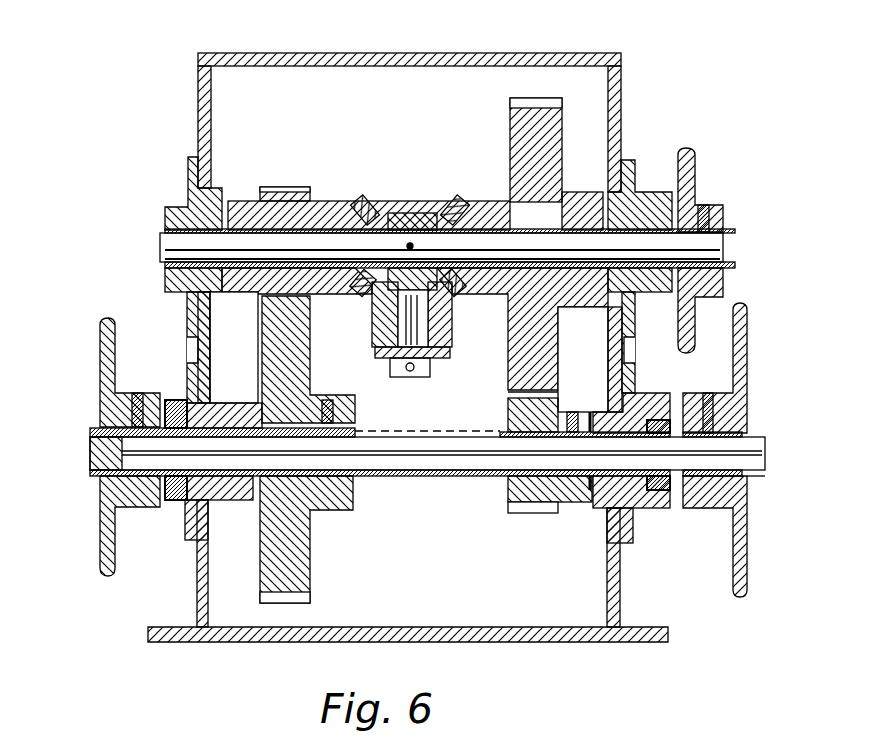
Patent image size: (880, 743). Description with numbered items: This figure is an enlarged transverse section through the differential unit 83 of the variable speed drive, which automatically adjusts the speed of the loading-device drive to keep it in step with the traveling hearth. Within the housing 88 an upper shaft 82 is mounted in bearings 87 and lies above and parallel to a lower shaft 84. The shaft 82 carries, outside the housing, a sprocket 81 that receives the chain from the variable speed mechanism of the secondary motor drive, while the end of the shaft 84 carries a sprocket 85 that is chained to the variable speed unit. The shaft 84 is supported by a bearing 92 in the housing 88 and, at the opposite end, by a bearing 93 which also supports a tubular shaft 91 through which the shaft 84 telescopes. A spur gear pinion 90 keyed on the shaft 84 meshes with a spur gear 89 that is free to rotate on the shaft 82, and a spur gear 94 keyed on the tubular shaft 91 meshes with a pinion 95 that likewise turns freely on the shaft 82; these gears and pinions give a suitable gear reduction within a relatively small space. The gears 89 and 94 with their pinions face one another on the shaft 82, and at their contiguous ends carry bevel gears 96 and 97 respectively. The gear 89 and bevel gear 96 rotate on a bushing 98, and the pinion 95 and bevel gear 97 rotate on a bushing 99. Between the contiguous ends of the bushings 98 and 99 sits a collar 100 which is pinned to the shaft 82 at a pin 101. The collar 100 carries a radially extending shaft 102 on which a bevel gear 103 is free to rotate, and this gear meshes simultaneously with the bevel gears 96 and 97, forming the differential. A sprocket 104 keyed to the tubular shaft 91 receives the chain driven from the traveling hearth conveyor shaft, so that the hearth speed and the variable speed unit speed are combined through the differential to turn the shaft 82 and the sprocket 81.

The sprocket 81 is at (696, 175).
The shaft 82 is at (723, 250).
The differential unit 83 is at (622, 78).
The shaft 84 is at (762, 477).
The sprocket 85 is at (748, 340).
The bearings 87 is at (172, 207).
The housing 88 is at (522, 53).
The spur gear 89 is at (510, 130).
The spur gear pinion 90 is at (528, 503).
The tubular shaft 91 is at (423, 478).
The bearing 92 is at (640, 512).
The bearing 93 is at (225, 500).
The spur gear 94 is at (305, 378).
The pinion 95 is at (290, 187).
The bevel gear 96 is at (452, 197).
The bevel gear 97 is at (368, 197).
The bushing 98 is at (573, 270).
The bushing 99 is at (226, 292).
The collar 100 is at (398, 213).
The pin 101 is at (413, 246).
The radially extending shaft 102 is at (420, 330).
The bevel gear 103 is at (440, 312).
The sprocket 104 is at (100, 385).